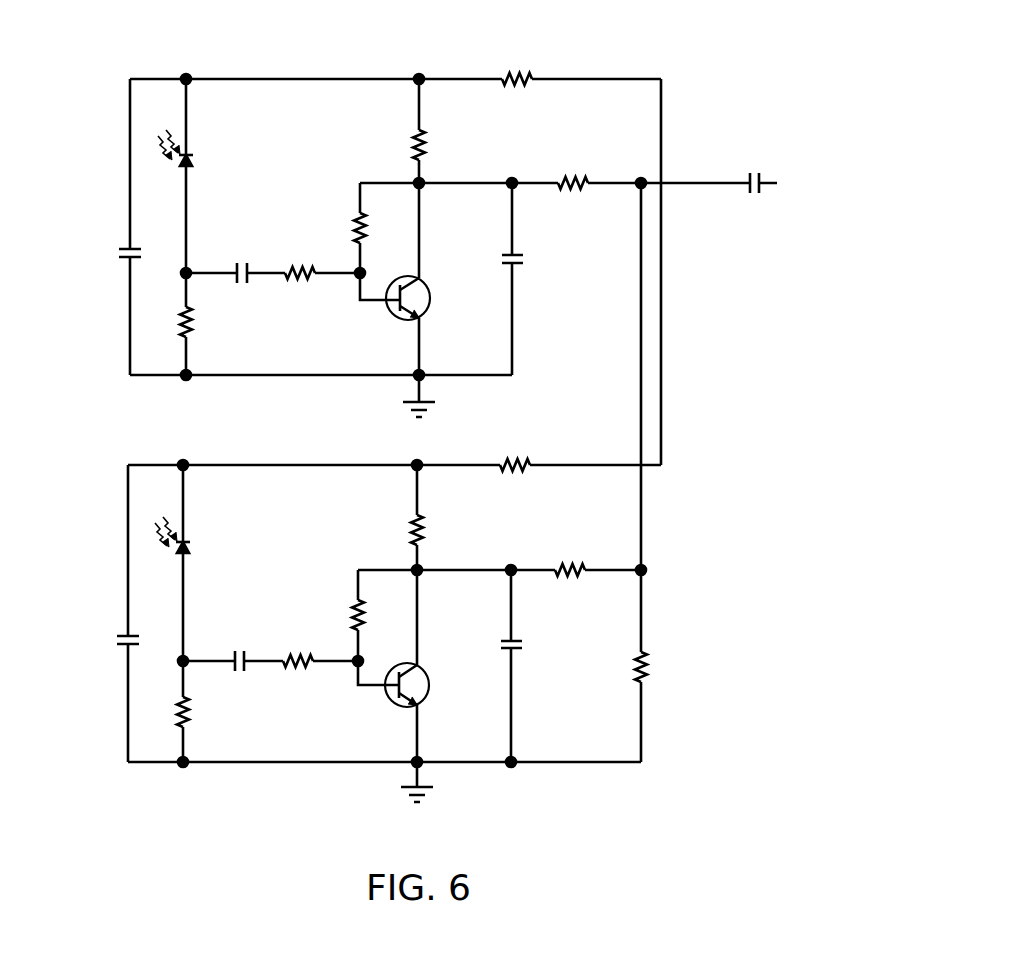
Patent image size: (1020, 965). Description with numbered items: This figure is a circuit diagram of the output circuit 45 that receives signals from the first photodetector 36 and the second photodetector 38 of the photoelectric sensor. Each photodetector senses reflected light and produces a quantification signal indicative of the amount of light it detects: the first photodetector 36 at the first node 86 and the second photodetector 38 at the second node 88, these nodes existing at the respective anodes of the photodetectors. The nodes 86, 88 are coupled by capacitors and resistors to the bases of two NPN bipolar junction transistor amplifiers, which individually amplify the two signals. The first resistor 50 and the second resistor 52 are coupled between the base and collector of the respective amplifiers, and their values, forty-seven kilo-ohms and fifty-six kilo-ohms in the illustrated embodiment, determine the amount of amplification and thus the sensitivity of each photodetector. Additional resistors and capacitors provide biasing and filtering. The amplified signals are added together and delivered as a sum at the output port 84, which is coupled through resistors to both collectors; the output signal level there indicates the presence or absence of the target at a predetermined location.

The output circuit 45 is at (629, 44).
The output port 84 is at (680, 183).
The first photodetector 36 is at (190, 167).
The first node 86 is at (186, 242).
The first resistor 50 is at (345, 207).
The second photodetector 38 is at (187, 554).
The second node 88 is at (183, 630).
The second resistor 52 is at (345, 595).